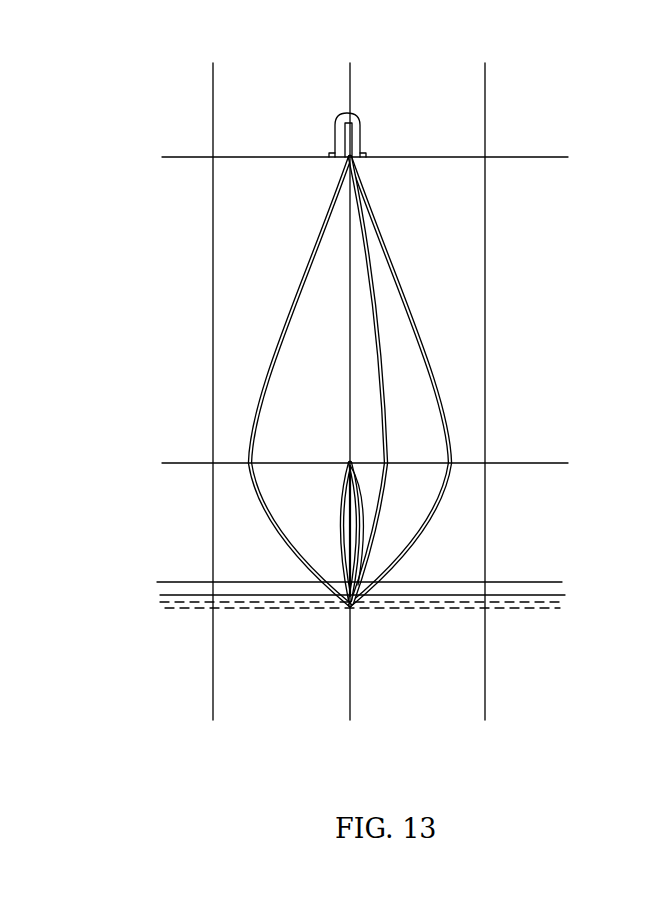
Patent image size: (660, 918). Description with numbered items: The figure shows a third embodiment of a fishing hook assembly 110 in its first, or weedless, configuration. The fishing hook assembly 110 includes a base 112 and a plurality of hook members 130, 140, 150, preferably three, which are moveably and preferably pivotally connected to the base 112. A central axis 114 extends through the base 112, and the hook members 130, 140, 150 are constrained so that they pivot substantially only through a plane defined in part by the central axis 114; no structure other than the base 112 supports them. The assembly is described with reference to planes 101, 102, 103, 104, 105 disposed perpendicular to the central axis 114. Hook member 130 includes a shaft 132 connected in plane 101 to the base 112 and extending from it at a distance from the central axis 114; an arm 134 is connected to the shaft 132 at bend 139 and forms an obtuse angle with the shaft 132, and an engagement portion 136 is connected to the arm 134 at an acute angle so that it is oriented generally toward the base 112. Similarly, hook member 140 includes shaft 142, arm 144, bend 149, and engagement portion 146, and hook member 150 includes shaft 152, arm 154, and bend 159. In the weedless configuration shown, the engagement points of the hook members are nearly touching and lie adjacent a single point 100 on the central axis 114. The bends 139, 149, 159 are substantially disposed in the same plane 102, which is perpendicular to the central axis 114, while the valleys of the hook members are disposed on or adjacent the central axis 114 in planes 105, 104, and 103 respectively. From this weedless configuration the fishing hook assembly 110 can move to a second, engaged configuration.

The single point 100 is at (333, 347).
The plane 101 is at (386, 158).
The plane 102 is at (394, 468).
The plane 103 is at (575, 580).
The plane 104 is at (160, 598).
The plane 105 is at (565, 605).
The fishing hook assembly 110 is at (333, 347).
The base 112 is at (357, 147).
The central axis 114 is at (350, 82).
The hook member 130 is at (467, 381).
The shaft 132 is at (393, 275).
The arm 134 is at (423, 525).
The engagement portion 136 is at (340, 527).
The bend 139 is at (460, 465).
The hook member 140 is at (225, 381).
The shaft 142 is at (308, 265).
The arm 144 is at (275, 528).
The engagement portion 146 is at (367, 470).
The bend 149 is at (248, 472).
The hook member 150 is at (457, 380).
The shaft 152 is at (383, 383).
The arm 154 is at (386, 506).
The bend 159 is at (392, 465).